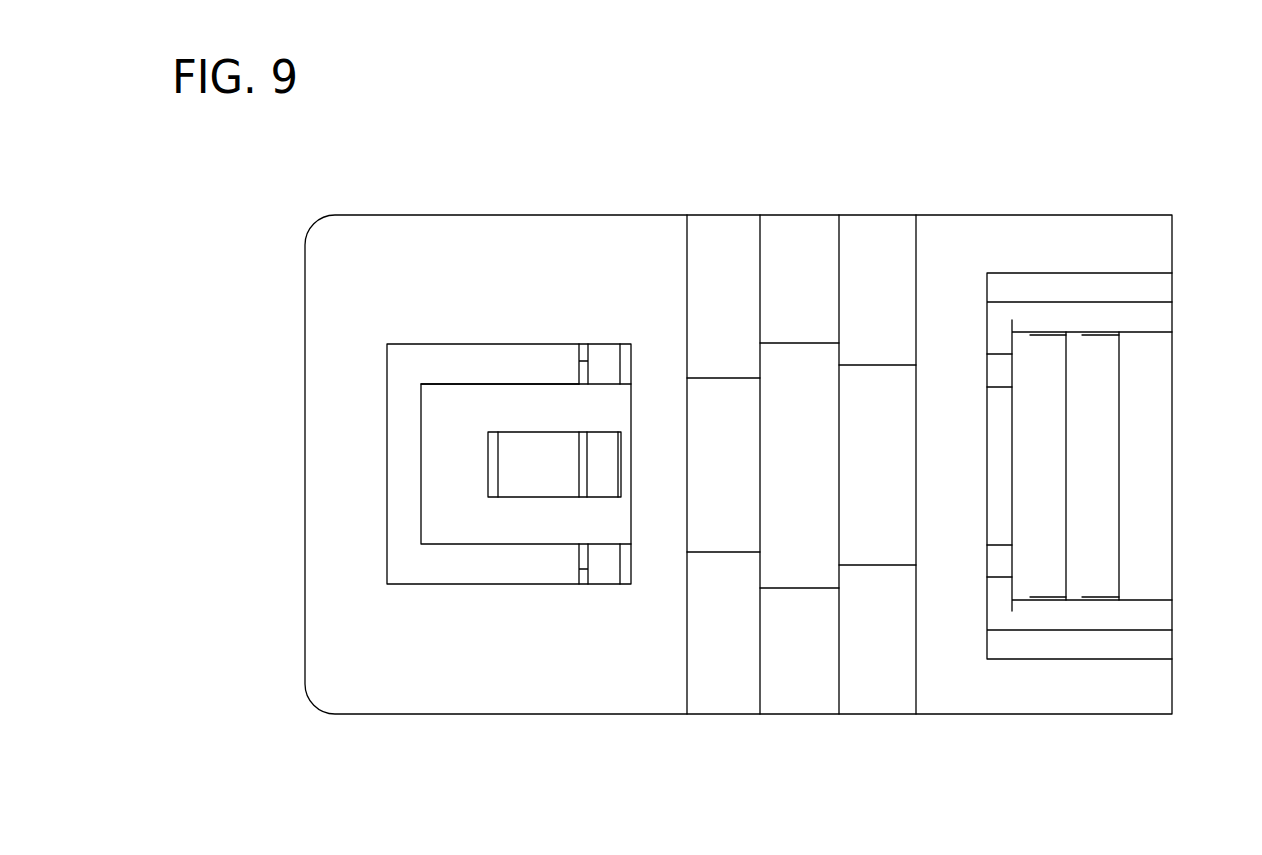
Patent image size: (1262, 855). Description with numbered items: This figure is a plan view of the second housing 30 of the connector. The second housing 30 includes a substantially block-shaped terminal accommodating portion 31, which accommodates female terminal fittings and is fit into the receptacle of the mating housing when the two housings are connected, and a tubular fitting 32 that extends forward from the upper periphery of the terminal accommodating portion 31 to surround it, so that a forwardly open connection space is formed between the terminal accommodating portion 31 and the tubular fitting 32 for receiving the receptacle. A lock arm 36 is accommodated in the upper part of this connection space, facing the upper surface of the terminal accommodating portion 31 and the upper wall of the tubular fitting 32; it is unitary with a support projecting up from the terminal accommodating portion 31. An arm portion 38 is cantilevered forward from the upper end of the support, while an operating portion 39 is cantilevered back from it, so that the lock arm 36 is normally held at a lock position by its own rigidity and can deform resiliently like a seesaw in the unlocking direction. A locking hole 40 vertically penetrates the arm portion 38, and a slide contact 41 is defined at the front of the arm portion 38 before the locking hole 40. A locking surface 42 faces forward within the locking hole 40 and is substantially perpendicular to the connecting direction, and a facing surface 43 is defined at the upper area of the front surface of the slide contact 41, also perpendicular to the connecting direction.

The second housing 30 is at (1058, 187).
The terminal accommodating portion 31 is at (1095, 690).
The tubular fitting 32 is at (422, 687).
The lock arm 36 is at (537, 354).
The arm portion 38 is at (611, 374).
The operating portion 39 is at (1155, 471).
The locking hole 40 is at (554, 600).
The slide contact 41 is at (526, 354).
The locking surface 42 is at (502, 600).
The facing surface 43 is at (477, 372).